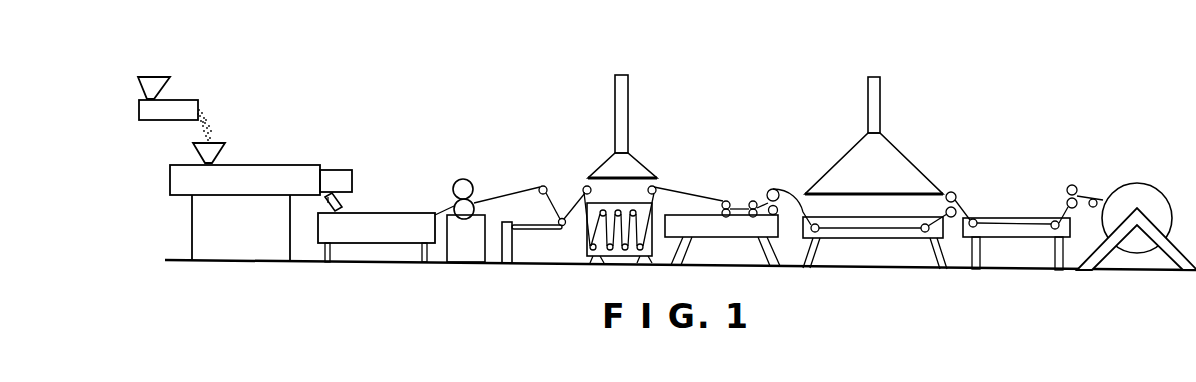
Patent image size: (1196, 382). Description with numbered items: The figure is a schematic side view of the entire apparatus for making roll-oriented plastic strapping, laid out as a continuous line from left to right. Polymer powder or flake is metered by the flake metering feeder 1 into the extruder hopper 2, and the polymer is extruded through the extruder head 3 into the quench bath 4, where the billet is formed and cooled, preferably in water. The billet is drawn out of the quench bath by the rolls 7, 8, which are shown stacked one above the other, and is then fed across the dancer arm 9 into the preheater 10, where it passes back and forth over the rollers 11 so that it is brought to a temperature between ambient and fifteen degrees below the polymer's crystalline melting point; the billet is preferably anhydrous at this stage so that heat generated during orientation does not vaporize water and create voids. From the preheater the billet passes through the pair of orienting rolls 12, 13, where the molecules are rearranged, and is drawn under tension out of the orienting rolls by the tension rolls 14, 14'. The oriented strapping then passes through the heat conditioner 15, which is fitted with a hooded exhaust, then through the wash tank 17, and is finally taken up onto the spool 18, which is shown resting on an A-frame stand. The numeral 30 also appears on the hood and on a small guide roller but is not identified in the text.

The flake metering feeder 1 is at (181, 103).
The extruder hopper 2 is at (196, 155).
The extruder head 3 is at (332, 193).
The quench bath 4 is at (380, 218).
The roll 7 is at (462, 179).
The roll 8 is at (466, 219).
The dancer arm 9 is at (521, 229).
The preheater 10 is at (587, 233).
The rollers 11 is at (590, 253).
The orienting roll 12 is at (724, 200).
The orienting roll 13 is at (722, 217).
The tension roll 14 is at (778, 176).
The tension roll 14' is at (787, 229).
The heat conditioner 15 is at (866, 226).
The wash tank 17 is at (985, 218).
The spool 18 is at (1168, 201).
The exhaust hood / guide roller 30 is at (875, 78).